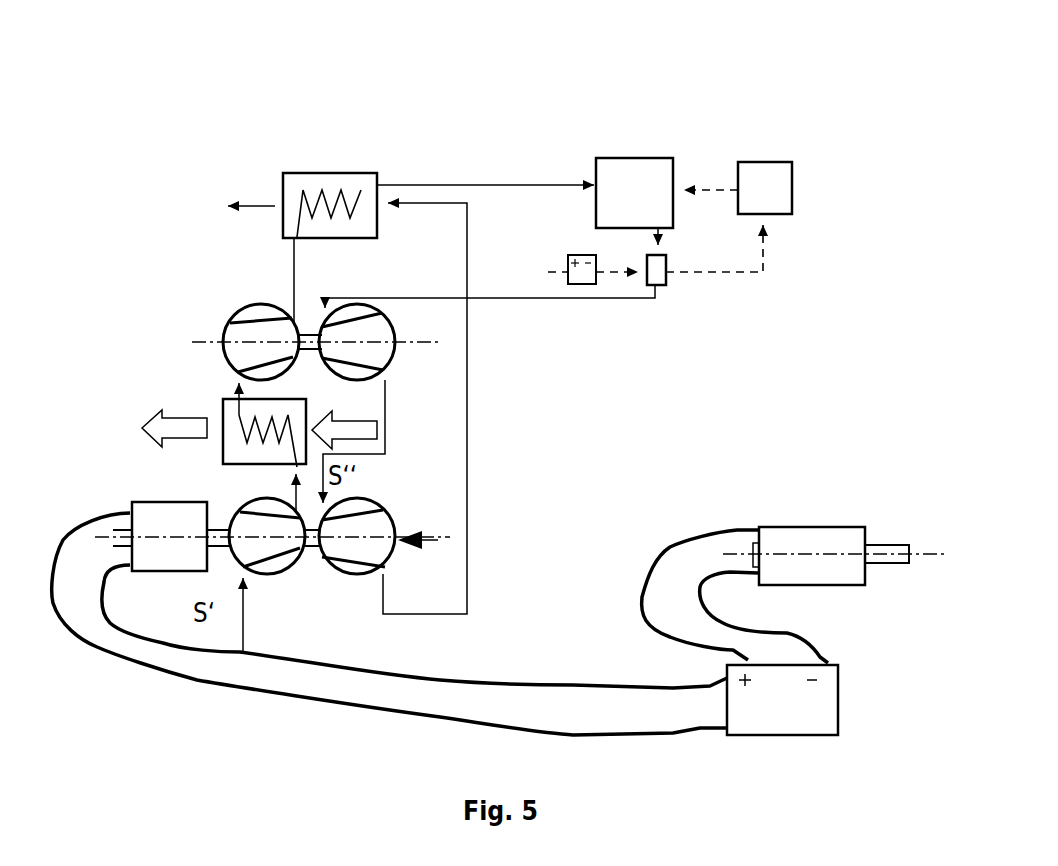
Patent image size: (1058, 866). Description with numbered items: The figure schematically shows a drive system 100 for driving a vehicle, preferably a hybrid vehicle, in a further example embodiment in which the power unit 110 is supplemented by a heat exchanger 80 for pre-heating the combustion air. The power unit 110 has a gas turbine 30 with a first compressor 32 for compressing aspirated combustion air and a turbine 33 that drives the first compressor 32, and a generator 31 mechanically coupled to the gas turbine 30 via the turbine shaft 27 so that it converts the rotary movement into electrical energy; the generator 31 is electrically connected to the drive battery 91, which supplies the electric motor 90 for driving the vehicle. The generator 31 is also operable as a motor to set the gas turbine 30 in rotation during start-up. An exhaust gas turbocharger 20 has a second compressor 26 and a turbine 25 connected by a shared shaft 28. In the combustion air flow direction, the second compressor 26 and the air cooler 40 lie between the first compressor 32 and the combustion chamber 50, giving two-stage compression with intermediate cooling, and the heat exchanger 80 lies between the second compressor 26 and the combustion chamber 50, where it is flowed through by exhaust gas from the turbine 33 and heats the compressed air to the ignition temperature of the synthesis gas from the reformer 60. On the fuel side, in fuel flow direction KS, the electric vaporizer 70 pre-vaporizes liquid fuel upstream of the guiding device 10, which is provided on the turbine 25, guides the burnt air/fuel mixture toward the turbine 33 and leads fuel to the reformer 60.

The power unit 110 is at (130, 98).
The drive system 100 is at (800, 110).
The guiding device 10 is at (664, 272).
The exhaust gas turbocharger 20 is at (160, 316).
The turbine 25 is at (387, 330).
The second compressor 26 is at (247, 332).
The turbine shaft 27 is at (308, 535).
The shared shaft 28 is at (307, 347).
The gas turbine 30 is at (420, 544).
The generator 31 is at (158, 547).
The first compressor 32 is at (260, 547).
The turbine 33 is at (385, 538).
The air cooler 40 is at (237, 433).
The combustion chamber 50 is at (600, 173).
The reformer 60 is at (778, 182).
The electric vaporizer 70 is at (588, 275).
The heat exchanger 80 is at (295, 182).
The electric motor 90 is at (810, 548).
The drive battery 91 is at (822, 702).
The fuel flow direction KS is at (762, 238).